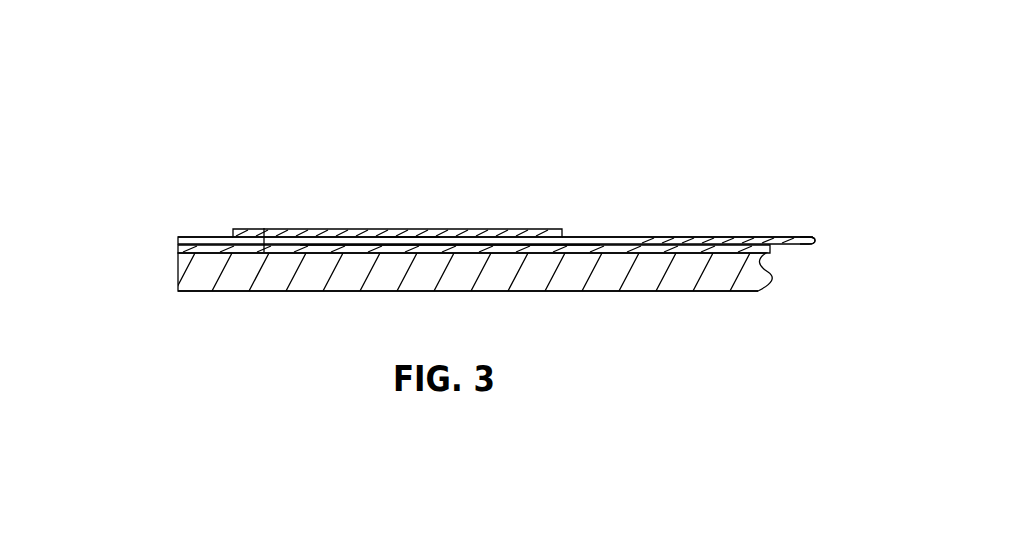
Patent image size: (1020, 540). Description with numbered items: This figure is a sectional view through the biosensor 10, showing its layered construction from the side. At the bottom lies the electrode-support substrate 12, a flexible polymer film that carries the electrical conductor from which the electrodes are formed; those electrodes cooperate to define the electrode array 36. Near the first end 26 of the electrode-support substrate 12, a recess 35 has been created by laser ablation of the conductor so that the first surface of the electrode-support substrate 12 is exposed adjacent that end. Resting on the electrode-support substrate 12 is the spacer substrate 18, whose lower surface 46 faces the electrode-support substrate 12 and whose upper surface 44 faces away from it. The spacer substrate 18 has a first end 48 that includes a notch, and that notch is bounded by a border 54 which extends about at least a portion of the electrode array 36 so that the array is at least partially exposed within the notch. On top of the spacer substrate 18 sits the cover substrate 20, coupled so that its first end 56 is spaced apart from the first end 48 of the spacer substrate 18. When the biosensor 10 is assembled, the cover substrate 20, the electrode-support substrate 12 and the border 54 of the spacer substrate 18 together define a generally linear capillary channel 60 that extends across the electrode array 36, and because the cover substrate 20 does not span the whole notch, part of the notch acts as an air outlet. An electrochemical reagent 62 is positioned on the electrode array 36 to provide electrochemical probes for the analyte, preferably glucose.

The biosensor 10 is at (593, 103).
The electrode-support substrate 12 is at (291, 305).
The spacer substrate 18 is at (697, 231).
The cover substrate 20 is at (342, 219).
The first end 26 is at (178, 274).
The recess 35 is at (264, 228).
The electrode array 36 is at (441, 250).
The upper surface 44 is at (767, 237).
The lower surface 46 is at (804, 246).
The first end 48 is at (178, 240).
The border 54 is at (592, 237).
The first end 56 is at (232, 236).
The capillary channel 60 is at (178, 249).
The electrochemical reagent 62 is at (408, 240).